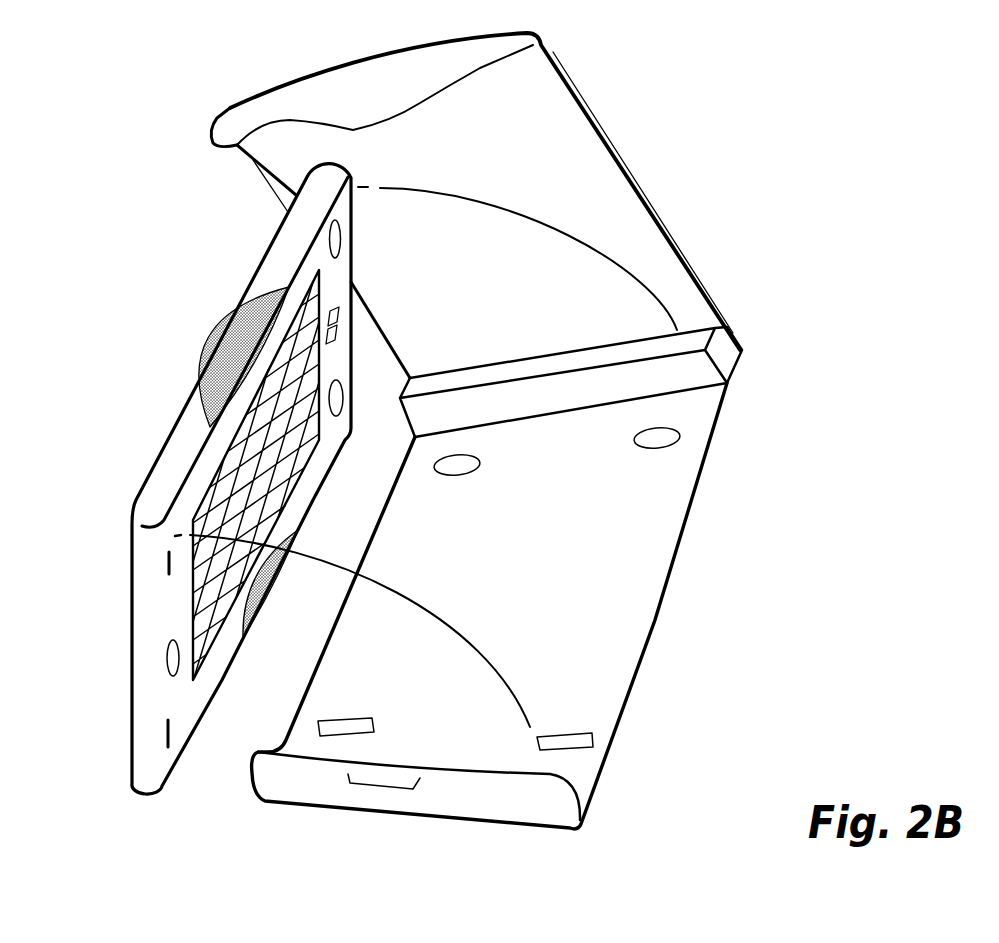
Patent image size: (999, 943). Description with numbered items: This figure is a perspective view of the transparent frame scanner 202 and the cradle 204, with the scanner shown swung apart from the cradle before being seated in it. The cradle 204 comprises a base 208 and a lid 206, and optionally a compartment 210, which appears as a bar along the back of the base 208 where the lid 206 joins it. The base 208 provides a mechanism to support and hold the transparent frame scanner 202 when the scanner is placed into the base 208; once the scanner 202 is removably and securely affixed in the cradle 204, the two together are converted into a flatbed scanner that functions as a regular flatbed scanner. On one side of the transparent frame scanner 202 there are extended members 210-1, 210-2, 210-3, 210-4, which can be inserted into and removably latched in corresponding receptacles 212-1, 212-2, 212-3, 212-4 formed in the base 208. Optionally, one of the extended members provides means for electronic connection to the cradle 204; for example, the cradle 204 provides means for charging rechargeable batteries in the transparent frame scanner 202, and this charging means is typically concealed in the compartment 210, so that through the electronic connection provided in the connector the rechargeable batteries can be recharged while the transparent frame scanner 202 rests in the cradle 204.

The transparent frame scanner 202 is at (160, 782).
The cradle 204 is at (490, 431).
The lid 206 is at (475, 205).
The base 208 is at (458, 606).
The compartment 210 is at (558, 402).
The extended member 210-1 is at (171, 741).
The extended member 210-2 is at (167, 562).
The extended member 210-3 is at (341, 247).
The extended member 210-4 is at (374, 423).
The receptacle 212-1 is at (360, 731).
The receptacle 212-2 is at (561, 742).
The receptacle 212-3 is at (453, 474).
The receptacle 212-4 is at (652, 446).